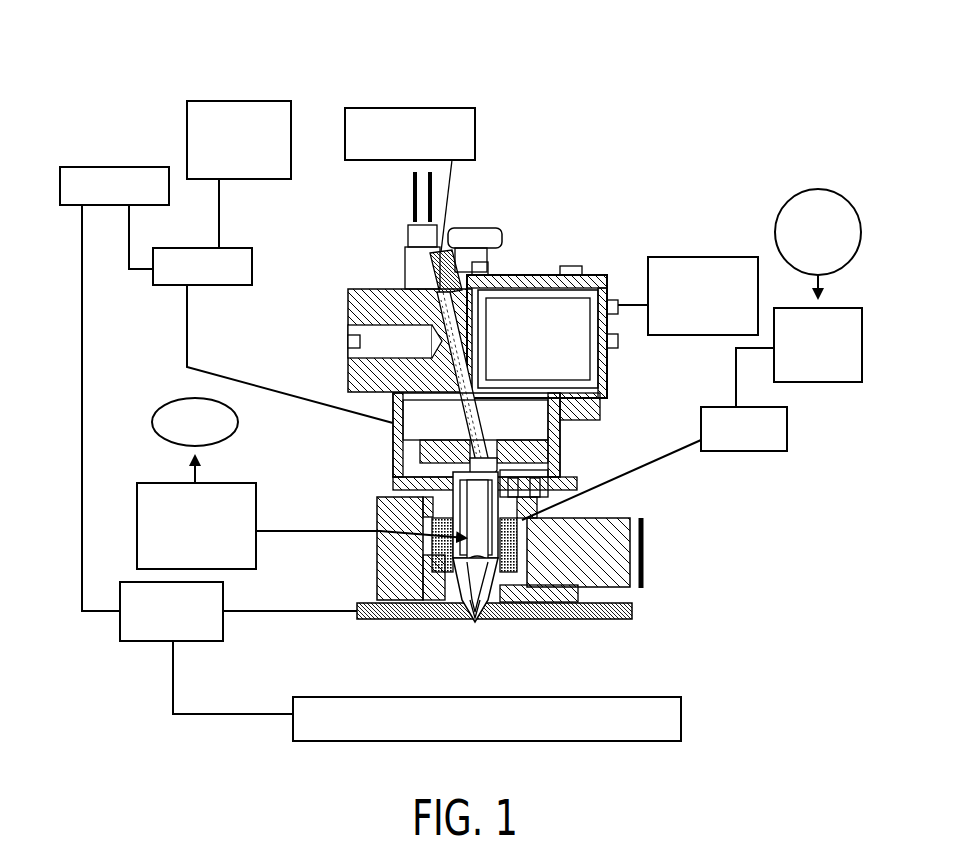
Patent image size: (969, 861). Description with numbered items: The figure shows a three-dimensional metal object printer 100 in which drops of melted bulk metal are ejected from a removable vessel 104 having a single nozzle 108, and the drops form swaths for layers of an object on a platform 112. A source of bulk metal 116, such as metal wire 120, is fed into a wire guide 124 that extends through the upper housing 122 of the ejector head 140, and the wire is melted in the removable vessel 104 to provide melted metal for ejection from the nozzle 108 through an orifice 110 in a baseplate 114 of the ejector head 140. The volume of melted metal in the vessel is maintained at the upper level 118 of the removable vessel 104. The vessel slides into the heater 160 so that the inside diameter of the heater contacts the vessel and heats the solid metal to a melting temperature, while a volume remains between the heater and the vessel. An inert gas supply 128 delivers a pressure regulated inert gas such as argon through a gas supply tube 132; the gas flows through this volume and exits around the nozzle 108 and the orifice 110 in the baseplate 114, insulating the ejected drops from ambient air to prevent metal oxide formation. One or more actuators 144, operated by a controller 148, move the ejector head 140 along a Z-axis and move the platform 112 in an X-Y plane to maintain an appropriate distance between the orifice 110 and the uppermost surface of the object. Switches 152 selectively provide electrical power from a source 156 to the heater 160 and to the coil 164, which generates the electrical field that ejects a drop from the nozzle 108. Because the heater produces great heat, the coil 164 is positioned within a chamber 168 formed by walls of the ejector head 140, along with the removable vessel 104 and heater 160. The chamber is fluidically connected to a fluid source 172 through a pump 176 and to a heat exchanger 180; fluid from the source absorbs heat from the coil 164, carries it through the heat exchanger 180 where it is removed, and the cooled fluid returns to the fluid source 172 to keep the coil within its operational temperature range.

The 3D metal object printer 100 is at (640, 92).
The removable vessel 104 is at (455, 538).
The nozzle 108 is at (481, 605).
The orifice 110 is at (458, 618).
The platform 112 is at (681, 712).
The baseplate 114 is at (630, 608).
The source of bulk metal 116 is at (426, 108).
The upper level 118 is at (473, 508).
The metal wire 120 is at (463, 470).
The upper housing 122 is at (365, 305).
The wire guide 124 is at (402, 397).
The inert gas supply 128 is at (702, 257).
The gas supply tube 132 is at (632, 305).
The ejector head 140 is at (272, 380).
The actuators 144 is at (223, 632).
The controller 148 is at (107, 167).
The switches 152 is at (253, 265).
The electrical power source 156 is at (242, 101).
The heater 160 is at (470, 522).
The coil 164 is at (520, 545).
The chamber 168 is at (430, 523).
The fluid source 172 is at (822, 382).
The pump 176 is at (755, 451).
The heat exchanger 180 is at (150, 483).